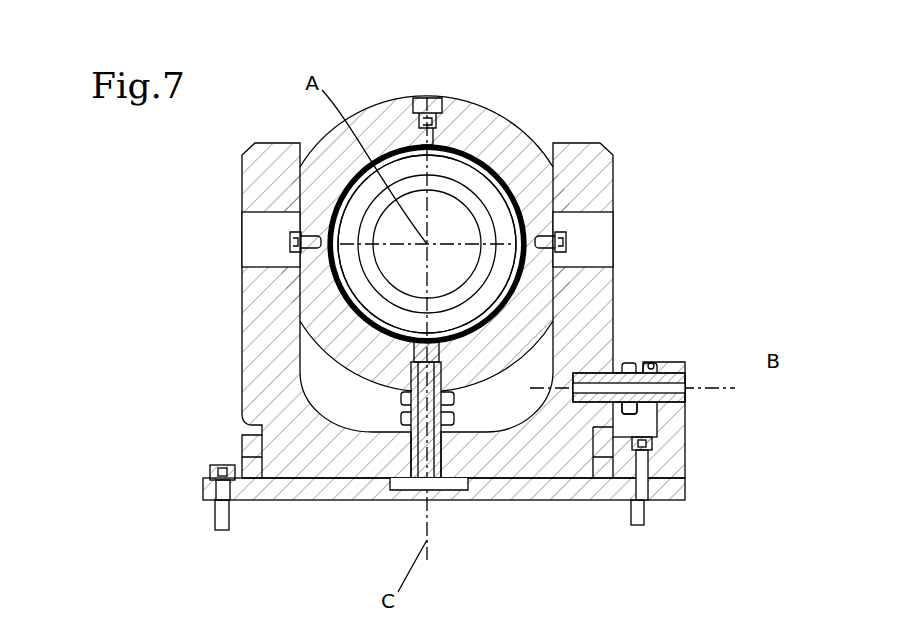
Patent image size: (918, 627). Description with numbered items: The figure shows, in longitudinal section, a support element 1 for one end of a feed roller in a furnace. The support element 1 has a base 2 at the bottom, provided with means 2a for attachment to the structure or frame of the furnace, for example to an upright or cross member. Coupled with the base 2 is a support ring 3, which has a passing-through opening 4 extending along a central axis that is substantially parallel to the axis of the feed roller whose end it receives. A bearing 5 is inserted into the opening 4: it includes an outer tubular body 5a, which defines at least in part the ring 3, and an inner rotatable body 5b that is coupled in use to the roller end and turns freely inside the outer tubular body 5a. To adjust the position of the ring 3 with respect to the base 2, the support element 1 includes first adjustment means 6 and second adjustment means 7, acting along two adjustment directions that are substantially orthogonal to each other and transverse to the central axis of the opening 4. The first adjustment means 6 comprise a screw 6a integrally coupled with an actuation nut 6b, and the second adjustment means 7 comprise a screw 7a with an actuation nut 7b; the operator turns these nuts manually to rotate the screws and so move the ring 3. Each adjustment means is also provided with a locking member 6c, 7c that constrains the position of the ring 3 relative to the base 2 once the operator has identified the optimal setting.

The support element 1 is at (672, 116).
The base 2 is at (300, 505).
The means for attachment 2a is at (222, 515).
The support ring 3 is at (512, 133).
The passing-through opening 4 is at (400, 268).
The bearing 5 is at (494, 214).
The outer tubular body 5a is at (507, 262).
The inner rotatable body 5b is at (482, 290).
The first adjustment means 6 is at (583, 391).
The screw 6a is at (672, 395).
The actuation nut 6b is at (628, 408).
The locking member 6c is at (655, 363).
The second adjustment means 7 is at (420, 448).
The screw 7a is at (436, 468).
The actuation nut 7b is at (402, 423).
The locking member 7c is at (402, 397).